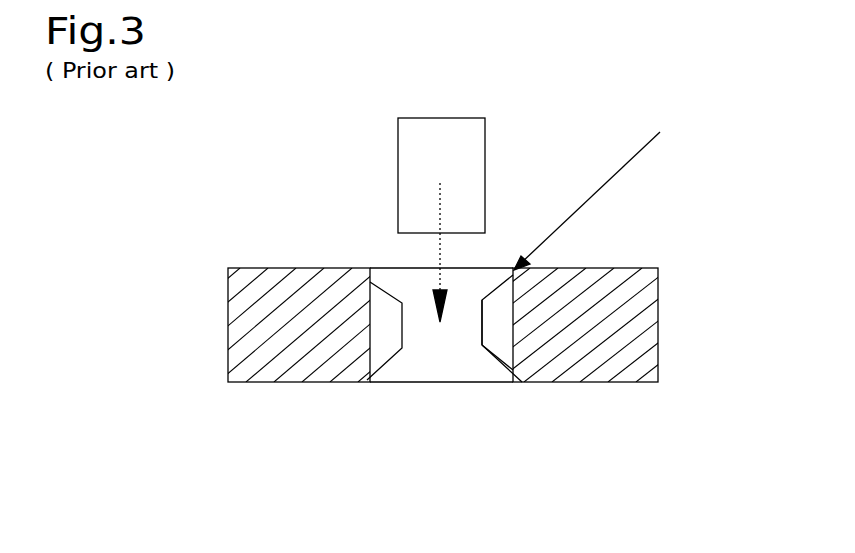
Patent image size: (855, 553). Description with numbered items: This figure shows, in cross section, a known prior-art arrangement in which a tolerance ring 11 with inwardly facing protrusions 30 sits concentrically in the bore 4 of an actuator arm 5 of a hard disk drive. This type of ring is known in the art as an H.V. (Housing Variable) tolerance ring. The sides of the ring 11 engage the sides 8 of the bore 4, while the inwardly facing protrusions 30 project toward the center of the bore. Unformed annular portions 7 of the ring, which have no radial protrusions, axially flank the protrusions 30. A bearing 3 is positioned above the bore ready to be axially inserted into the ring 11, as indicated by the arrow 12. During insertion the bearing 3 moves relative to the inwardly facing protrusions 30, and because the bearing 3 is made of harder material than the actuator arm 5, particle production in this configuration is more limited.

The bearing 3 is at (496, 153).
The bore 4 is at (313, 360).
The actuator arm 5 is at (625, 340).
The unformed annular portions 7 is at (514, 277).
The sides of the bore 8 is at (531, 396).
The tolerance ring 11 is at (608, 195).
The arrow 12 is at (440, 253).
The inwardly facing protrusions 30 is at (582, 368).